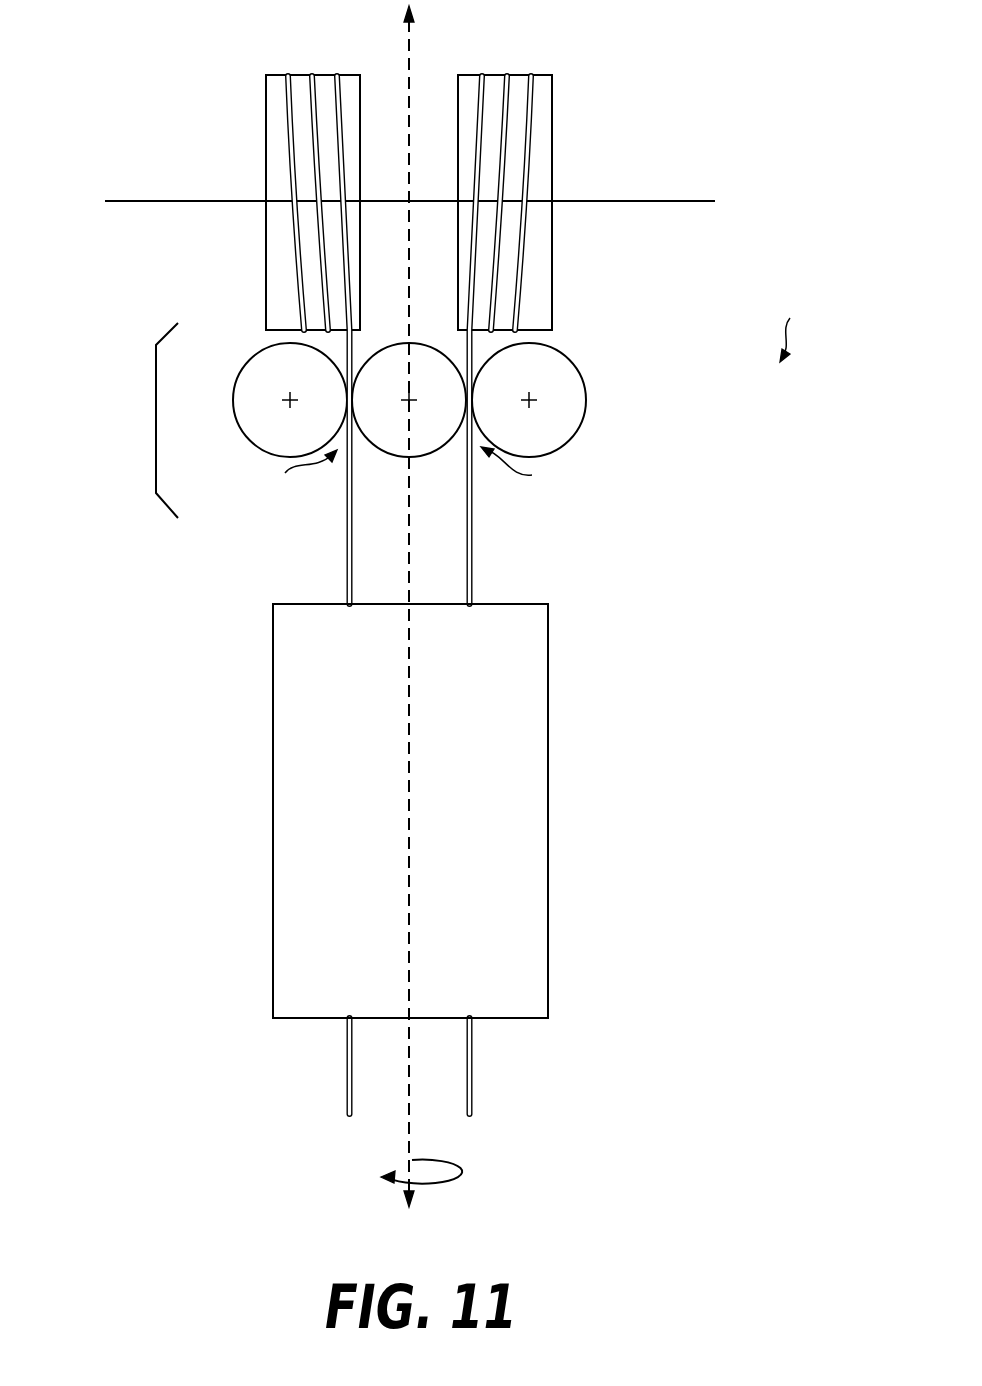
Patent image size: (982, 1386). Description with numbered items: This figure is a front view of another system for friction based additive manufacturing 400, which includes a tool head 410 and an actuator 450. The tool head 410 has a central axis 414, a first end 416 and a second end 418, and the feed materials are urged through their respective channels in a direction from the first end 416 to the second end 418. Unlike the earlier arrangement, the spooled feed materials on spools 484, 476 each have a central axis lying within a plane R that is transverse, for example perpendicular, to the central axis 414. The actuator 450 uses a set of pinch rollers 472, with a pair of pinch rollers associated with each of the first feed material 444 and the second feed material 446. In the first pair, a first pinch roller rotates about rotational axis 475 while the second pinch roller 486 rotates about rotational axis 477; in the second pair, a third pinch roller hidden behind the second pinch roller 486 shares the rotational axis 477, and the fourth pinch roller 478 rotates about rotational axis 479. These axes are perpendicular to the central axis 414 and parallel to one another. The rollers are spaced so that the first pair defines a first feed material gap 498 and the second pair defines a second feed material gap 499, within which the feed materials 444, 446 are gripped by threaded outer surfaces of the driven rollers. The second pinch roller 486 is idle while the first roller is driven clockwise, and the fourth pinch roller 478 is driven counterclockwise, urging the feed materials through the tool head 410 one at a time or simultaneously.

The system for friction based additive manufacturing 400 is at (804, 326).
The tool head 410 is at (548, 846).
The central axis 414 is at (408, 85).
The first end 416 is at (498, 604).
The second end 418 is at (508, 1021).
The first feed material 444 is at (307, 72).
The second feed material 446 is at (532, 72).
The actuator 450 is at (112, 420).
The set of pinch rollers 472 is at (156, 415).
The rotational axis 475 is at (288, 400).
The spool 476 is at (552, 127).
The rotational axis 477 is at (409, 400).
The fourth pinch roller 478 is at (572, 382).
The rotational axis 479 is at (530, 402).
The spool 484 is at (266, 130).
The second pinch roller 486 is at (397, 445).
The first feed material gap 498 is at (296, 478).
The second feed material gap 499 is at (519, 476).
The plane R is at (670, 201).